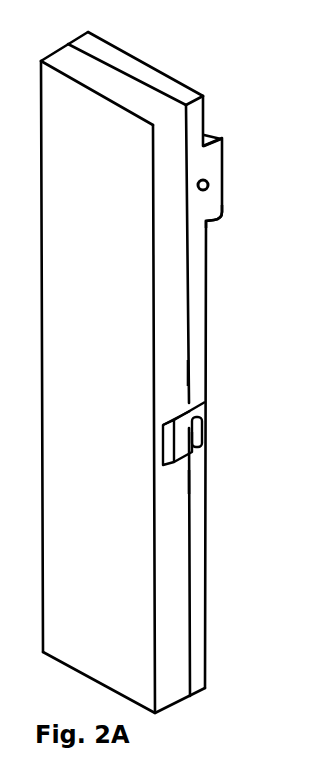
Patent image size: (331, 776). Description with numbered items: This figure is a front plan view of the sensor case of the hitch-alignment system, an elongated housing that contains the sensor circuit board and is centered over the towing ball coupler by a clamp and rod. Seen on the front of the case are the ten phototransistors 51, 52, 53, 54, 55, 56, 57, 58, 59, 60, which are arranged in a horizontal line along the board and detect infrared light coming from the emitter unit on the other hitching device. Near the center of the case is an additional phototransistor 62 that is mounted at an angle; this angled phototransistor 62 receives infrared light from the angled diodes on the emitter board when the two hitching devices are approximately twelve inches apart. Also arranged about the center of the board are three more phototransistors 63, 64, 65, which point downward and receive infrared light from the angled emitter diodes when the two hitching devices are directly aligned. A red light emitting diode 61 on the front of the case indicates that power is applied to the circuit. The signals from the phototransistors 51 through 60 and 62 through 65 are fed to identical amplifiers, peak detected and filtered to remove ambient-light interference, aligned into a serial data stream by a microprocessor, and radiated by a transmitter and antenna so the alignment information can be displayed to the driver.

The phototransistor 51 is at (127, 189).
The phototransistor 52 is at (127, 243).
The phototransistor 53 is at (128, 298).
The phototransistor 54 is at (128, 351).
The phototransistor 55 is at (128, 405).
The phototransistor 56 is at (130, 461).
The phototransistor 57 is at (128, 512).
The phototransistor 58 is at (128, 565).
The phototransistor 59 is at (130, 622).
The phototransistor 60 is at (132, 668).
The red light emitting diode 61 is at (125, 213).
The angled phototransistor 62 is at (163, 448).
The downward-pointing phototransistor 63 is at (188, 373).
The downward-pointing phototransistor 64 is at (197, 424).
The downward-pointing phototransistor 65 is at (188, 482).